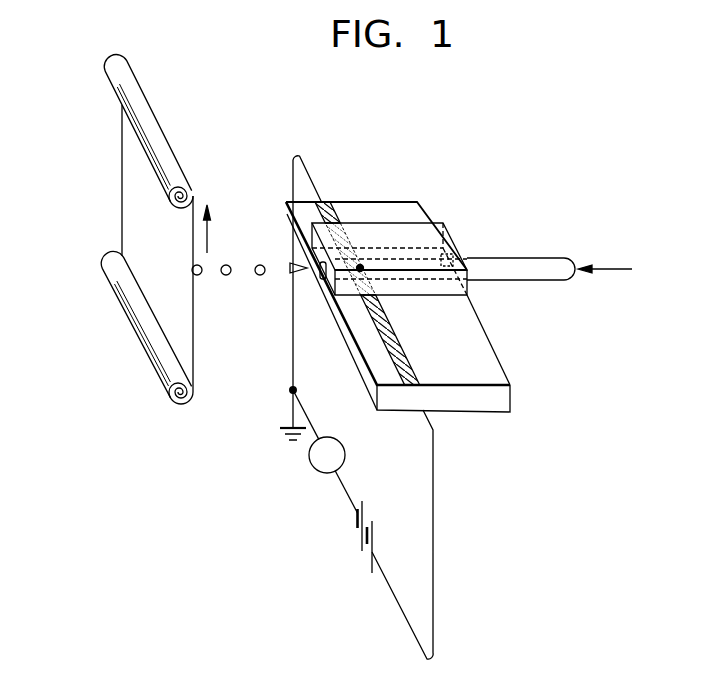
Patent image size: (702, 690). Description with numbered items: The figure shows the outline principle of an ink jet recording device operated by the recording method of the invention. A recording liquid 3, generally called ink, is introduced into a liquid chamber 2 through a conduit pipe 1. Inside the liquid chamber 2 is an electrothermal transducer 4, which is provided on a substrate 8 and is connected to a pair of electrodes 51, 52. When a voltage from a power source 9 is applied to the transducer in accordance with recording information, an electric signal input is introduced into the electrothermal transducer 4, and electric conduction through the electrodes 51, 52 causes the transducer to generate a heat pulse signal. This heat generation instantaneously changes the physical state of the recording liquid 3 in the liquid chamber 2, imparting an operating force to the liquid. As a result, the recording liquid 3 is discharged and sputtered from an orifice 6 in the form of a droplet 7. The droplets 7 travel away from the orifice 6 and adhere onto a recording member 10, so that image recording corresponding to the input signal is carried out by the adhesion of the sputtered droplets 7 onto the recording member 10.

The conduit pipe 1 is at (530, 267).
The liquid chamber 2 is at (424, 248).
The recording liquid 3 is at (440, 266).
The electrothermal transducer 4 is at (361, 265).
The electrode 51 is at (322, 201).
The electrode 52 is at (398, 347).
The orifice 6 is at (322, 273).
The droplet 7 is at (226, 277).
The substrate 8 is at (505, 398).
The power source 9 is at (368, 558).
The recording member 10 is at (196, 358).